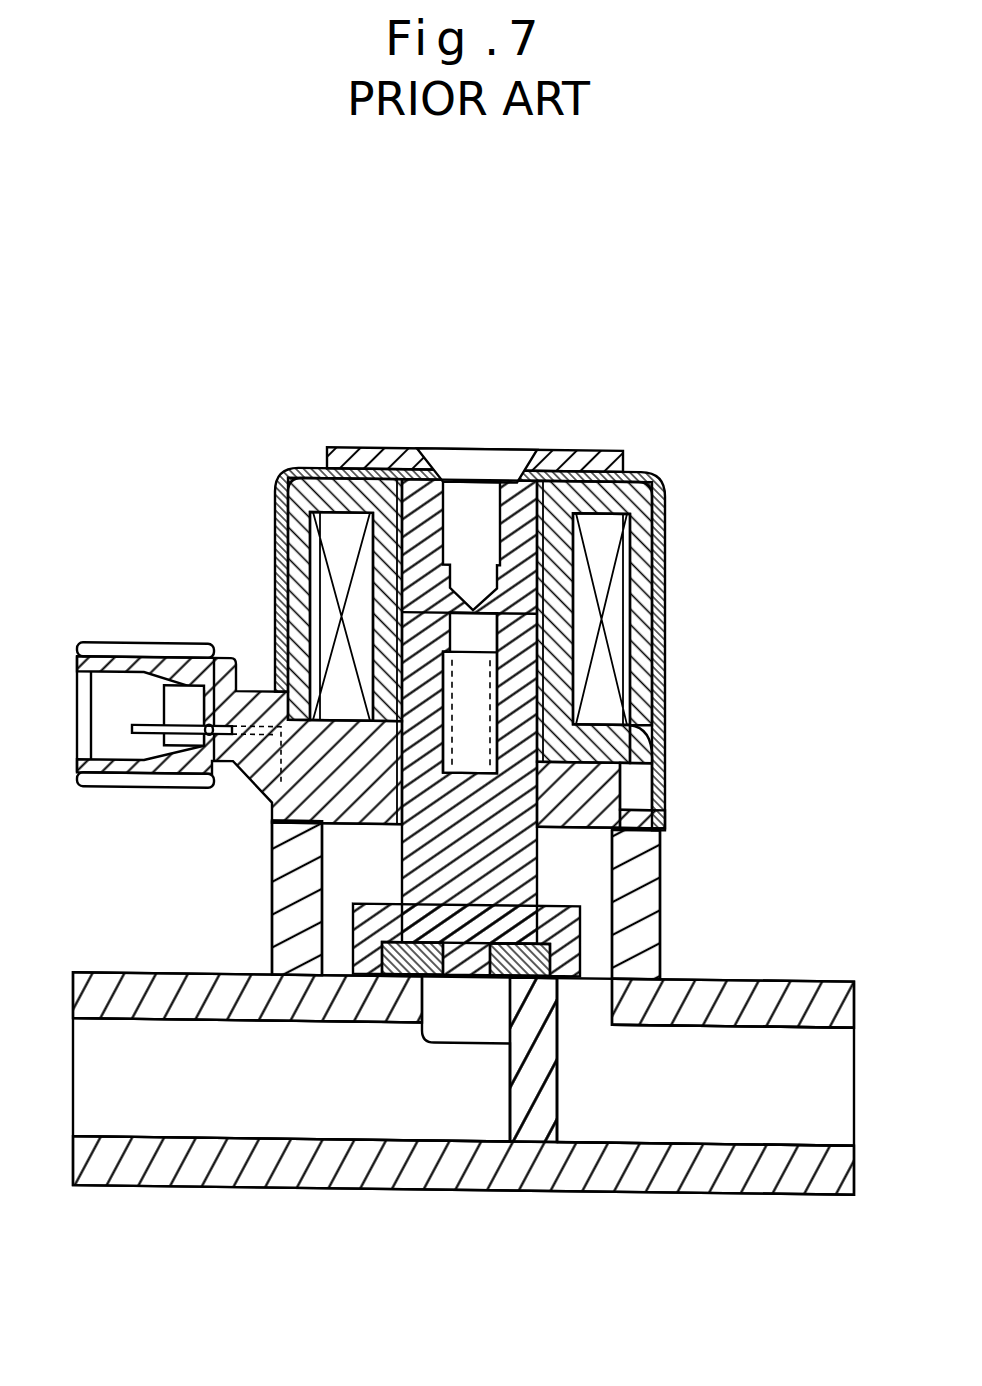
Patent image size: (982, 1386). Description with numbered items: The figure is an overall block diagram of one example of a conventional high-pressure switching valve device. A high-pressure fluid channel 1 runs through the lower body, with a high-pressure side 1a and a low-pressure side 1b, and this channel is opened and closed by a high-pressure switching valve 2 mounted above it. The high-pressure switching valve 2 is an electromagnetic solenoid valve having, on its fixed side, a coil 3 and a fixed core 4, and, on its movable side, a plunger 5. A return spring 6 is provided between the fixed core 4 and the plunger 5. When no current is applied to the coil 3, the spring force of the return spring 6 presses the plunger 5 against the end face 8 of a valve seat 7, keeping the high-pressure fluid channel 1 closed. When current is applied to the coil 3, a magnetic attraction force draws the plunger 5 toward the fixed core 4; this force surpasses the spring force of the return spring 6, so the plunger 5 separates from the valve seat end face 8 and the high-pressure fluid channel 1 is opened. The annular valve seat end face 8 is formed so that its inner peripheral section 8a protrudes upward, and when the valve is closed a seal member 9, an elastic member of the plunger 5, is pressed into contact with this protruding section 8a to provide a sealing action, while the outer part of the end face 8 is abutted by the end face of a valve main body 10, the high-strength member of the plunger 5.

The high-pressure fluid channel 1 is at (468, 1203).
The high-pressure side 1a is at (703, 1120).
The low-pressure side 1b is at (230, 1110).
The high-pressure switching valve 2 is at (679, 565).
The coil 3 is at (335, 530).
The fixed core 4 is at (508, 478).
The plunger 5 is at (549, 856).
The return spring 6 is at (493, 632).
The valve seat 7 is at (558, 1023).
The valve seat end face 8 is at (380, 937).
The inner peripheral section 8a is at (560, 942).
The seal member 9 is at (408, 950).
The valve main body 10 is at (400, 840).